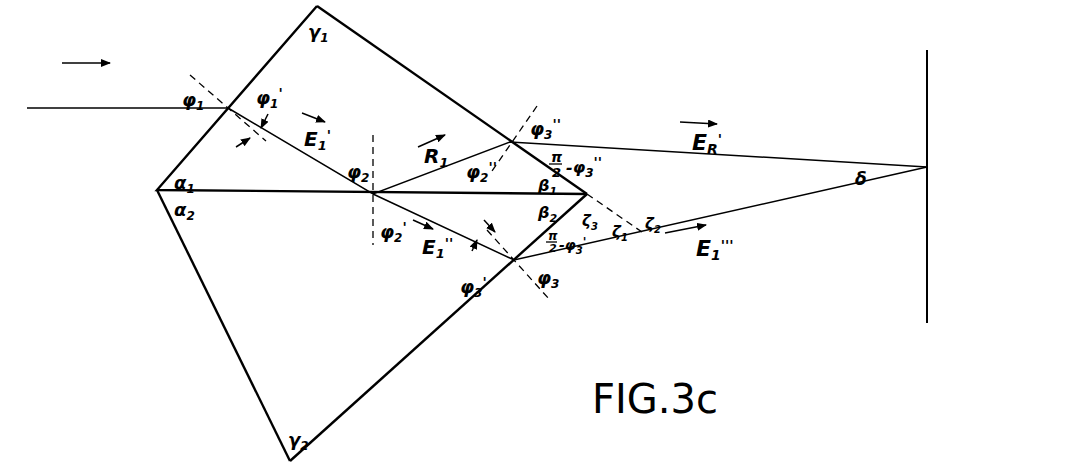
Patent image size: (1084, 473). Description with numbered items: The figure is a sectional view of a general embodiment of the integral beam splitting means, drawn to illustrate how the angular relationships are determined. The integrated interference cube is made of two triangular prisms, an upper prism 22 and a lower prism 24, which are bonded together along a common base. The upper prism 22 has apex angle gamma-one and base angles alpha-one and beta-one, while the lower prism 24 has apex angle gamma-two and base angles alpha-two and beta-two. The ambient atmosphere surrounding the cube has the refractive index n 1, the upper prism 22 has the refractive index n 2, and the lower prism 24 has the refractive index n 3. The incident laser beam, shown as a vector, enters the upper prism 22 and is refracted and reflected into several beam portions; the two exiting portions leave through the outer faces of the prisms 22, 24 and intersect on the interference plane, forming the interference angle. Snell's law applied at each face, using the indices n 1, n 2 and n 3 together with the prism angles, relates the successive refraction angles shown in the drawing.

The upper prism 22 is at (460, 103).
The lower prism 24 is at (435, 332).
The surrounding medium with refractive index n1 / incident beam E1 1 is at (244, 215).
The upper prism medium with refractive index n2 2 is at (372, 100).
The lower prism medium with refractive index n3 3 is at (241, 325).